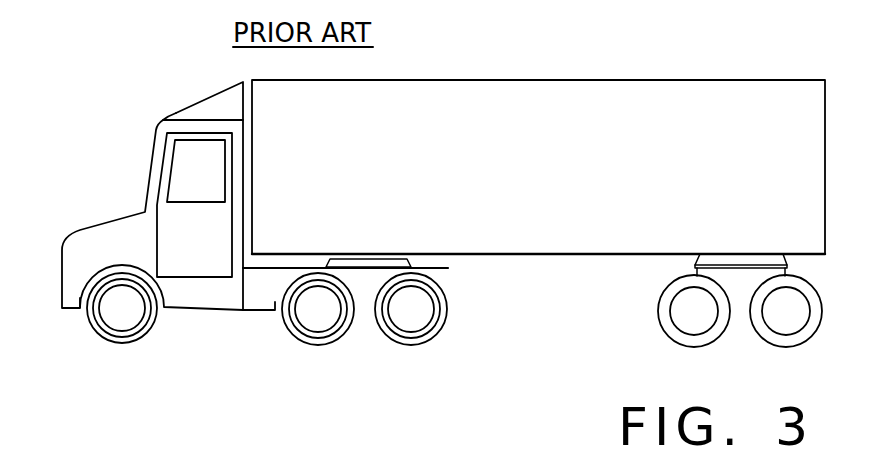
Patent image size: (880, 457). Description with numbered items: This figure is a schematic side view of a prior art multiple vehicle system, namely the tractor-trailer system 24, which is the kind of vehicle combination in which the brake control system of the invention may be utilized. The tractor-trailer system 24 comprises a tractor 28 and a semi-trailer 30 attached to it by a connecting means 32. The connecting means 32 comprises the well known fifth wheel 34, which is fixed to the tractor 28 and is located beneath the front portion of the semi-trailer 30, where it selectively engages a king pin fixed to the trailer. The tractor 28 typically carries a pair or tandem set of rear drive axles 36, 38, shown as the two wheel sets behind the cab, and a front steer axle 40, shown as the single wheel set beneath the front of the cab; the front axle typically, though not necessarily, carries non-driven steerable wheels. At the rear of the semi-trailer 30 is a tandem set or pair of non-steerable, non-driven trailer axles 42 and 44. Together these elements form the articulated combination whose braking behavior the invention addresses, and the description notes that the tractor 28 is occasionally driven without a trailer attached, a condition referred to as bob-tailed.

The tractor-trailer system 24 is at (500, 80).
The tractor 28 is at (176, 113).
The semi-trailer 30 is at (677, 118).
The connecting means 32 is at (362, 244).
The fifth wheel 34 is at (323, 262).
The rear drive axle 36 is at (307, 345).
The rear drive axle 38 is at (422, 345).
The front steer axle 40 is at (137, 338).
The trailer axle 42 is at (663, 327).
The trailer axle 44 is at (757, 330).